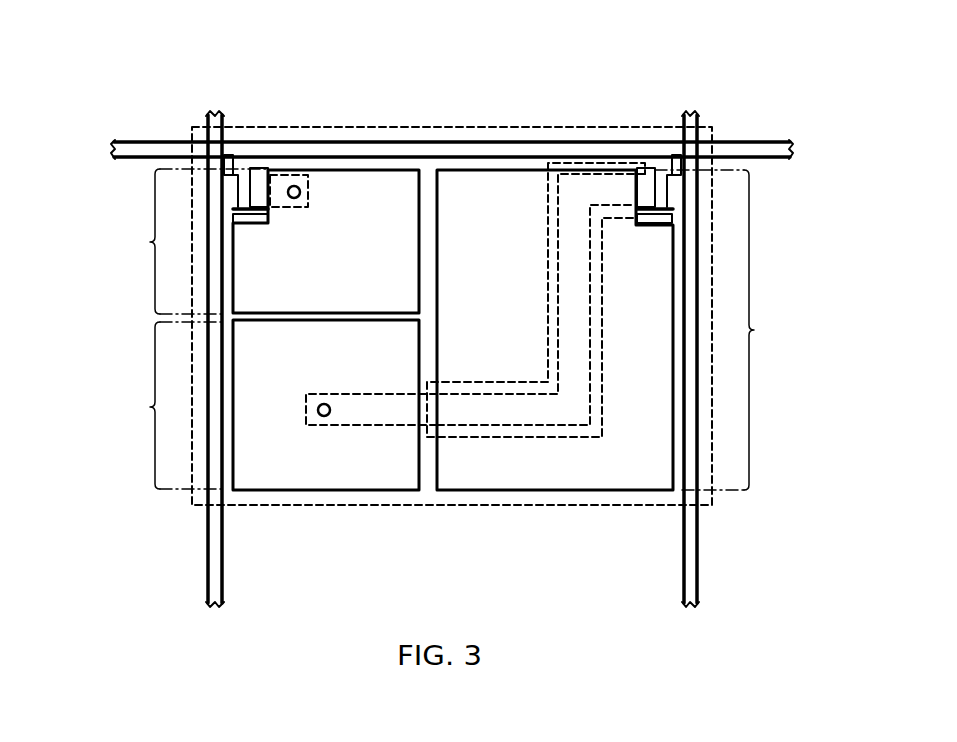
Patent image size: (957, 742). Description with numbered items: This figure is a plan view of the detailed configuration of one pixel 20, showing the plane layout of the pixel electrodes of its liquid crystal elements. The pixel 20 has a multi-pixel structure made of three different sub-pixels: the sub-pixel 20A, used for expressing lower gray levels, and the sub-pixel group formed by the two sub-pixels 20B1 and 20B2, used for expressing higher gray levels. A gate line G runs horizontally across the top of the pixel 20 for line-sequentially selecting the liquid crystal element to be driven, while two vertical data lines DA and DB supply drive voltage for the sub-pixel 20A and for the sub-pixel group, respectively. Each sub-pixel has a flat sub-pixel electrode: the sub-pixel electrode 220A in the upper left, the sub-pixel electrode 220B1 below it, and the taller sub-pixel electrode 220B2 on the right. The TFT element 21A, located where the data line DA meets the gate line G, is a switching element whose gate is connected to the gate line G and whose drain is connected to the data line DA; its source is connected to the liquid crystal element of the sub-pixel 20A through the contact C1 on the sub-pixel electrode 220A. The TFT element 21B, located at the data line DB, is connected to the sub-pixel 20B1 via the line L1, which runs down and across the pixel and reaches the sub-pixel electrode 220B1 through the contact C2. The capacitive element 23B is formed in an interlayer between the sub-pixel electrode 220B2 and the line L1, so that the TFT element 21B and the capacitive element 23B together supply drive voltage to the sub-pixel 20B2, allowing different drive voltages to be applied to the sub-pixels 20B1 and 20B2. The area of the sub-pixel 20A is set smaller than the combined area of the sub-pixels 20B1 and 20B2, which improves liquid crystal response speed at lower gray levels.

The data line DA is at (207, 137).
The data line DB is at (698, 137).
The gate line G is at (745, 140).
The pixel 20 is at (421, 511).
The sub-pixel 20A is at (185, 241).
The sub-pixel 20B1 is at (156, 405).
The sub-pixel 20B2 is at (736, 330).
The sub-pixel electrode 220A is at (230, 268).
The sub-pixel electrode 220B1 is at (230, 442).
The sub-pixel electrode 220B2 is at (675, 385).
The TFT element 21A is at (238, 157).
The TFT element 21B is at (663, 157).
The contact C1 is at (294, 185).
The contact C2 is at (325, 417).
The line L1 is at (547, 205).
The capacitive element 23B is at (516, 445).